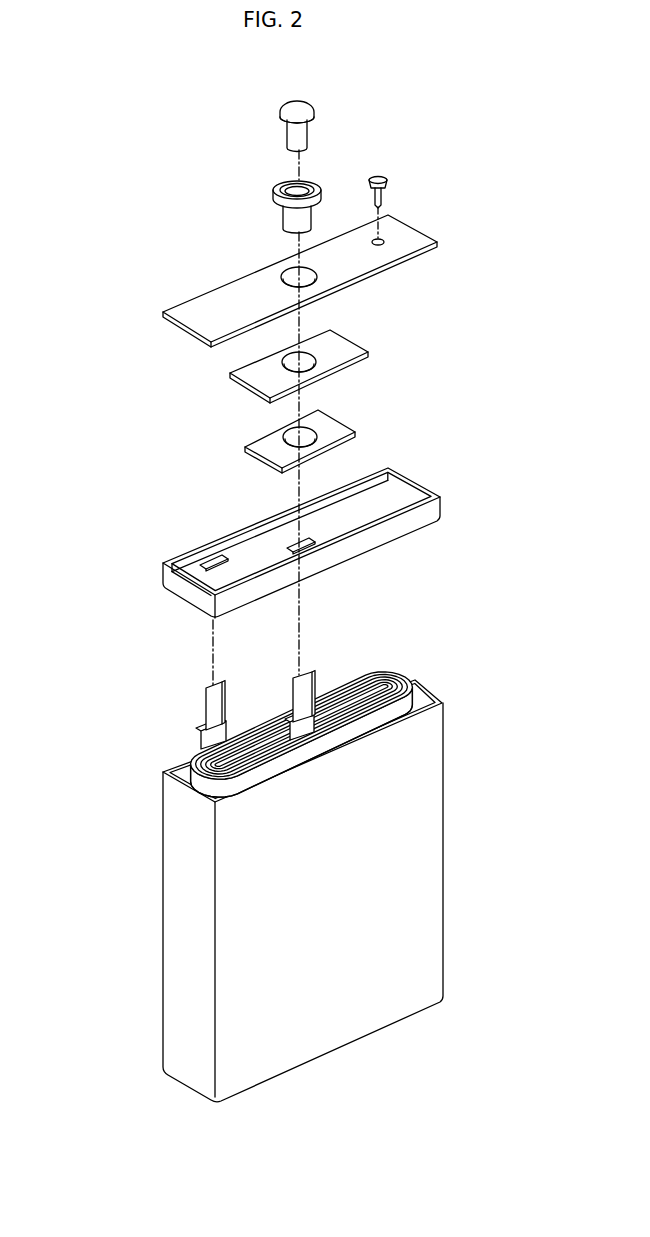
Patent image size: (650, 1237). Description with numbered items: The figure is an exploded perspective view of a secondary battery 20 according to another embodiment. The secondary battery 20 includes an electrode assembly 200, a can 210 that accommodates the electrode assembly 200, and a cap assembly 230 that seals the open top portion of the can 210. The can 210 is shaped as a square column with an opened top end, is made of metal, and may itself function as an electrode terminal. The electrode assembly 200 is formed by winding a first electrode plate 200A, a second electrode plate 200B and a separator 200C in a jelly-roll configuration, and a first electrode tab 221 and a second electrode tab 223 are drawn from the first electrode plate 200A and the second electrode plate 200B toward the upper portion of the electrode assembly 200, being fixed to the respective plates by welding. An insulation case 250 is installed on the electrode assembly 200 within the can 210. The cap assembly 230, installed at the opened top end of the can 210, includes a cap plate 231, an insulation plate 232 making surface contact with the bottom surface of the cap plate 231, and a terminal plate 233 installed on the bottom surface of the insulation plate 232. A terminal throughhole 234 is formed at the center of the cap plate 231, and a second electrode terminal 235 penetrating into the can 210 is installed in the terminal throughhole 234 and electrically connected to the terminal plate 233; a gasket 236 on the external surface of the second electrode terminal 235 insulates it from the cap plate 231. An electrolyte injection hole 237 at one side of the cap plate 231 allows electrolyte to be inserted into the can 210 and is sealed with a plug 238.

The secondary battery 20 is at (62, 74).
The electrode assembly 200 is at (340, 691).
The first electrode plate 200A is at (412, 678).
The second electrode plate 200B is at (387, 680).
The separator 200C is at (403, 678).
The can 210 is at (433, 813).
The first electrode tab 221 is at (212, 700).
The second electrode tab 223 is at (302, 690).
The cap assembly 230 is at (126, 223).
The cap plate 231 is at (303, 268).
The insulation plate 232 is at (232, 374).
The terminal plate 233 is at (250, 443).
The terminal throughhole 234 is at (285, 270).
The second electrode terminal 235 is at (295, 100).
The gasket 236 is at (282, 184).
The electrolyte injection hole 237 is at (382, 240).
The plug 238 is at (382, 176).
The insulation case 250 is at (245, 556).